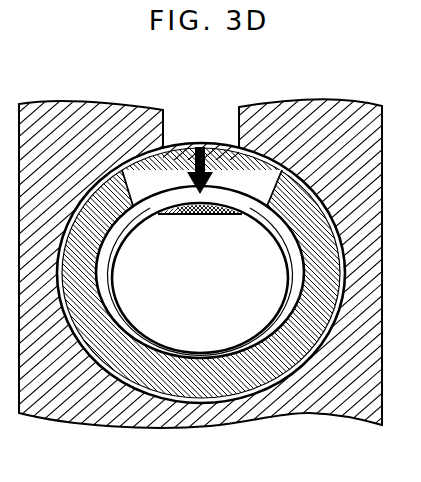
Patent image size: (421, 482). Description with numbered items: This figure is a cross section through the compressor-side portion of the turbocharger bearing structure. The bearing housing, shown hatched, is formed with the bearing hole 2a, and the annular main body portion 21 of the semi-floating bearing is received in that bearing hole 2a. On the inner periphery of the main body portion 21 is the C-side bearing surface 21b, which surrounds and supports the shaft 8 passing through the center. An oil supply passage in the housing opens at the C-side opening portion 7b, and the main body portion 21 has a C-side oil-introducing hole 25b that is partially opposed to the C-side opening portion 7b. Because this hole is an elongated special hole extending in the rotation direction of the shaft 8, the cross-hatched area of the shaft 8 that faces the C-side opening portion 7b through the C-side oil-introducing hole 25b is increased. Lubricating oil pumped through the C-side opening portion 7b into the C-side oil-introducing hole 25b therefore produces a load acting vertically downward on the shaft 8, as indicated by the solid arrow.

The main body portion 21 is at (318, 181).
The C-side bearing surface 21b is at (137, 336).
The bearing hole 2a is at (108, 176).
The C-side opening portion 7b is at (243, 144).
The shaft 8 is at (208, 295).
The C-side oil-introducing hole 25b is at (140, 199).